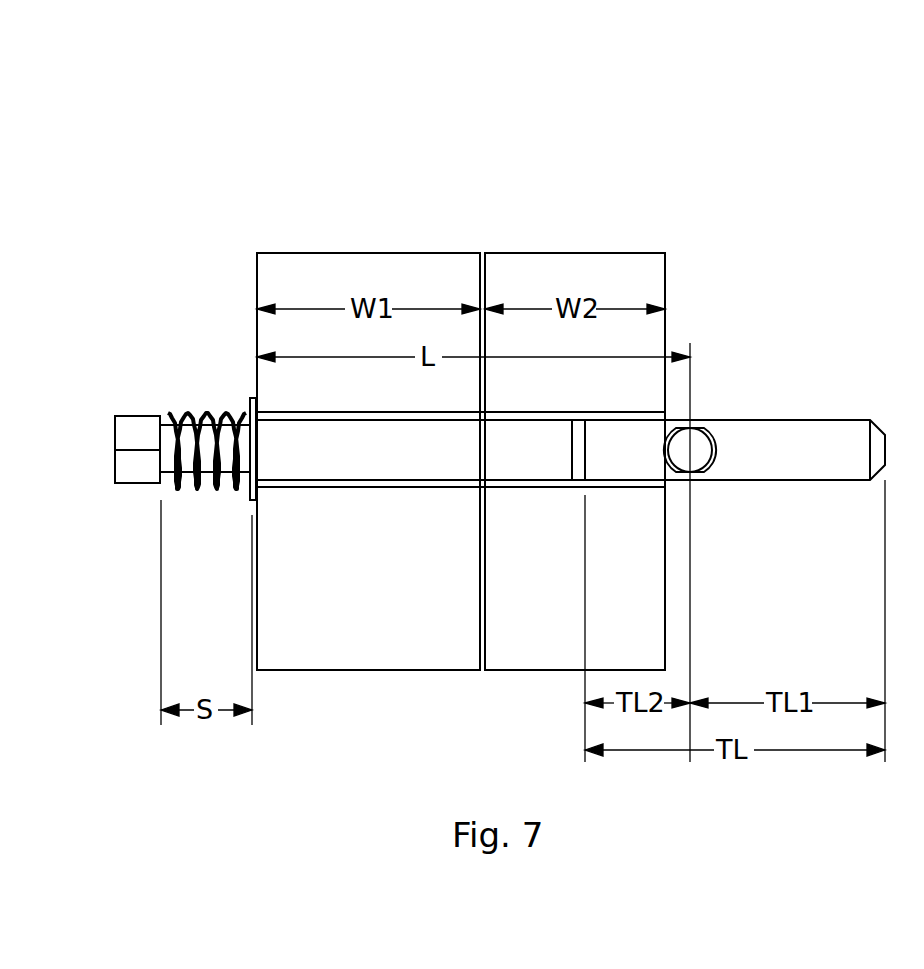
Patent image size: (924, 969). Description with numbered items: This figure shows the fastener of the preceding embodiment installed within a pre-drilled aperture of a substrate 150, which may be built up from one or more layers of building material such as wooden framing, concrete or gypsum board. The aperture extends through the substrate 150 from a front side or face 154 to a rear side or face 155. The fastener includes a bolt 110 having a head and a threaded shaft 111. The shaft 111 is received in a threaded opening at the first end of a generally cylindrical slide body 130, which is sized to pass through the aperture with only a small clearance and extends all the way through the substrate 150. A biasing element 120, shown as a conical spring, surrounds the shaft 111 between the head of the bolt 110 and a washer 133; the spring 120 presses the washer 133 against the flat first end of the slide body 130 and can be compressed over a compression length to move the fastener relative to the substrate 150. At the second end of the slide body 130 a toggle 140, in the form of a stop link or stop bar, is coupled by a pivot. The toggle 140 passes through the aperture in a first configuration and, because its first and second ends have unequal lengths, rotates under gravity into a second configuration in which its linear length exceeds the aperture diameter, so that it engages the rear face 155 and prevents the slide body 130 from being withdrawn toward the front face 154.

The substrate 150 is at (318, 118).
The front side or face 154 is at (257, 284).
The rear side or face 155 is at (665, 284).
The slide body 130 is at (368, 520).
The toggle 140 is at (714, 390).
The bolt 110 is at (114, 395).
The shaft 111 is at (190, 465).
The biasing element (conical spring) 120 is at (197, 376).
The washer 133 is at (255, 503).